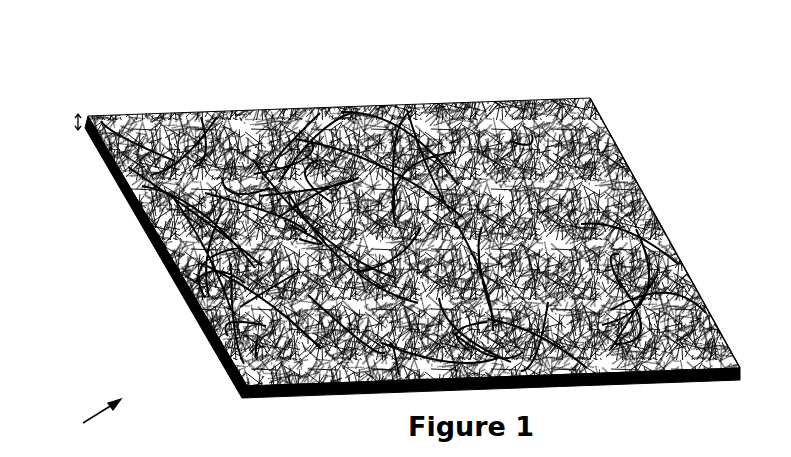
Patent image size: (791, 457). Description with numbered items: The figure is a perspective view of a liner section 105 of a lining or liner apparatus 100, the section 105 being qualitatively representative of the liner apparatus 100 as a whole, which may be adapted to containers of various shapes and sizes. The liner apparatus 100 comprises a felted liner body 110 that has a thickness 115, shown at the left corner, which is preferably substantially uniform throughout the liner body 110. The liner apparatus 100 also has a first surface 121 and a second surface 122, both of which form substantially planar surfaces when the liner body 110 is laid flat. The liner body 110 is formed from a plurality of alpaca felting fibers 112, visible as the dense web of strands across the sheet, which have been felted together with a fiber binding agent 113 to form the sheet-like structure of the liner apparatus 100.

The liner apparatus 100 is at (377, 233).
The liner section 105 is at (87, 422).
The felted liner body 110 is at (290, 108).
The alpaca felting fibers 112 is at (443, 105).
The fiber binding agent 113 is at (175, 283).
The thickness 115 is at (73, 126).
The first surface 121 is at (607, 178).
The second surface 122 is at (273, 400).